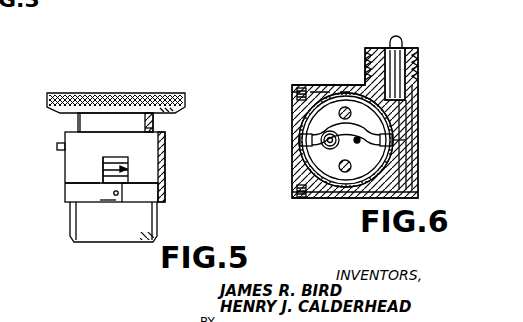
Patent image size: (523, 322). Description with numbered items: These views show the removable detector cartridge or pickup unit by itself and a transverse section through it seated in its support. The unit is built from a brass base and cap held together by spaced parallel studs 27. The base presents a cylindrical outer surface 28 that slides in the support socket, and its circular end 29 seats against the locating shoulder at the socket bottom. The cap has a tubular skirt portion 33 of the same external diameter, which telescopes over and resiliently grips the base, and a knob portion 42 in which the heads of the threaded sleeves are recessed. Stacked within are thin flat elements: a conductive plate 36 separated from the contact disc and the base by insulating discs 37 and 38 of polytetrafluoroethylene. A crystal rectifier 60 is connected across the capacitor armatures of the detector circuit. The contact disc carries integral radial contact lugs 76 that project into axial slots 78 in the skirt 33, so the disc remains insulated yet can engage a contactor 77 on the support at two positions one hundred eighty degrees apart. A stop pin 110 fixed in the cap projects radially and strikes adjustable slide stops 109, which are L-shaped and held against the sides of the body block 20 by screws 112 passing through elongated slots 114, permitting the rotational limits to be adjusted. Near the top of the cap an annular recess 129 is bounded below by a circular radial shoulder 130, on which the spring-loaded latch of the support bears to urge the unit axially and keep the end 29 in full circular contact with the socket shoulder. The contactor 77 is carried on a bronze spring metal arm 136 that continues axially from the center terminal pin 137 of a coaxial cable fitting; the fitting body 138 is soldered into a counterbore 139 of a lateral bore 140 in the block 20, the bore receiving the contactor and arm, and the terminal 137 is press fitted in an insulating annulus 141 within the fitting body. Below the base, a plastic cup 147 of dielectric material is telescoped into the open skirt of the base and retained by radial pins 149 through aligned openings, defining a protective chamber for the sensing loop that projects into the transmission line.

In FIG. 6, the body block 20 is at (300, 156).
In FIG. 6, the studs 27 is at (349, 163).
In FIG. 5, the cylindrical outer surface 28 is at (152, 193).
In FIG. 5, the circular end of the base 29 is at (162, 204).
In FIG. 5, the tubular skirt portion 33 is at (167, 163).
In FIG. 5, the conductive plate 36 is at (113, 160).
In FIG. 5, the insulating disc 37 is at (104, 152).
In FIG. 5, the insulating disc 38 is at (100, 183).
In FIG. 6, the insulating disc 38 is at (305, 119).
In FIG. 5, the knob portion 42 is at (150, 97).
In FIG. 6, the crystal rectifier 60 is at (324, 152).
In FIG. 5, the contact lugs 76 is at (126, 168).
In FIG. 6, the contact lugs 76 is at (351, 115).
In FIG. 6, the contactor 77 is at (410, 151).
In FIG. 5, the axial slots 78 is at (118, 196).
In FIG. 6, the axial slots 78 is at (301, 139).
In FIG. 6, the adjustable slide stops 109 is at (330, 85).
In FIG. 5, the stop pin 110 is at (57, 146).
In FIG. 6, the screws 112 is at (301, 88).
In FIG. 6, the elongated slots 114 is at (312, 197).
In FIG. 5, the annular recess 129 is at (153, 119).
In FIG. 5, the circular radial shoulder 130 is at (160, 131).
In FIG. 6, the spring metal arm 136 is at (418, 112).
In FIG. 6, the center terminal pin 137 is at (400, 40).
In FIG. 6, the fitting body 138 is at (372, 62).
In FIG. 6, the counterbore 139 is at (366, 78).
In FIG. 6, the lateral bore 140 is at (418, 96).
In FIG. 6, the insulating annulus 141 is at (418, 70).
In FIG. 5, the plastic cup 147 is at (77, 218).
In FIG. 5, the radial pins 149 is at (114, 197).